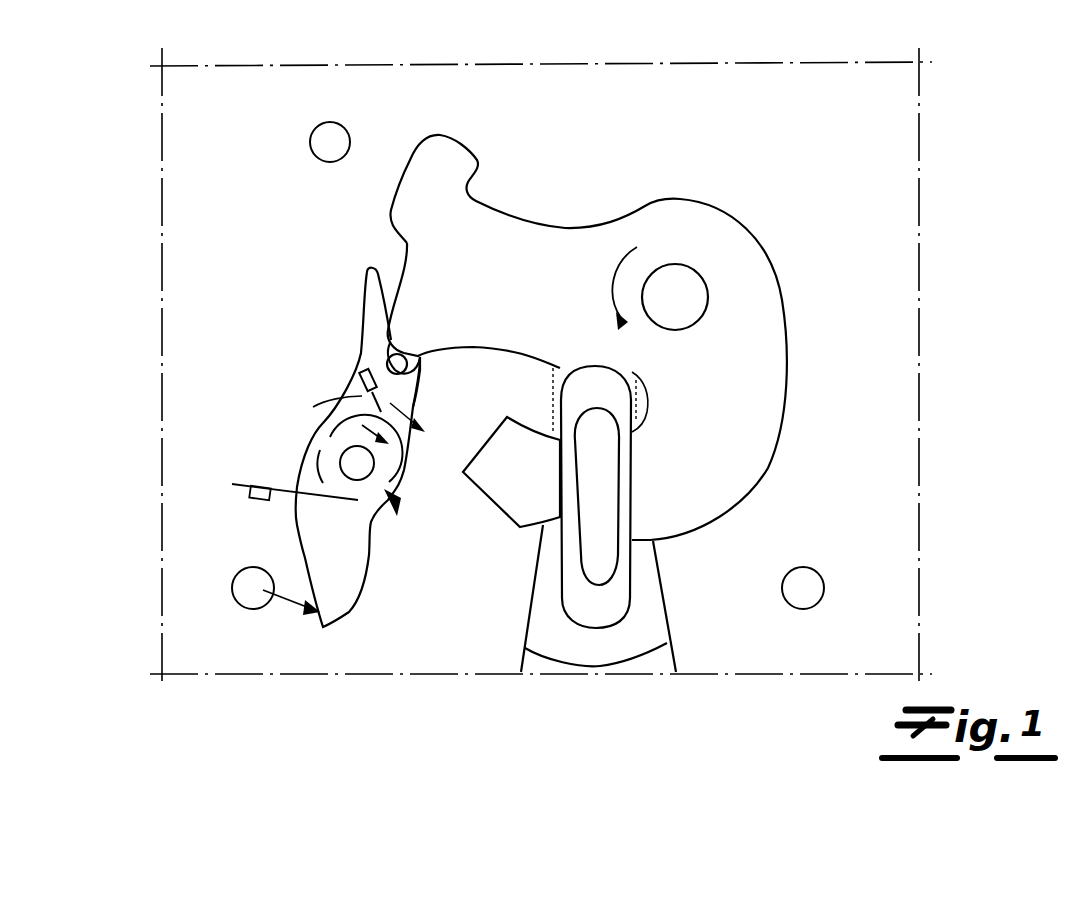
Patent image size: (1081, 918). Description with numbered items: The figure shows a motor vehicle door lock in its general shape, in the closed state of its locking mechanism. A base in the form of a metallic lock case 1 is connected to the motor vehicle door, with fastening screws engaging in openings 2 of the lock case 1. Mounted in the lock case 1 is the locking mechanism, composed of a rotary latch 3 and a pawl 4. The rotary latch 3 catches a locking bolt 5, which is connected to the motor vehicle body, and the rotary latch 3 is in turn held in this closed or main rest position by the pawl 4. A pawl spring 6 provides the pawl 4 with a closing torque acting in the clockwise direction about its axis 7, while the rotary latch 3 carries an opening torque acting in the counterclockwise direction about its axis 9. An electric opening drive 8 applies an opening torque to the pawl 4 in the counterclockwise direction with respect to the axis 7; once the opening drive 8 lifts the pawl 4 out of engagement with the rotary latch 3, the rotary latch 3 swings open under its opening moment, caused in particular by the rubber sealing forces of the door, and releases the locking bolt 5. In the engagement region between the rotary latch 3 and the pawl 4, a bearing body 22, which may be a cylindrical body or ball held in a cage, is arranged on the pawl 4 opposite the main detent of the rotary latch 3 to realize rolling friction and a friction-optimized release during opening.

The lock case 1 is at (812, 148).
The openings 2 is at (330, 128).
The rotary latch 3 is at (779, 334).
The pawl 4 is at (376, 316).
The locking bolt 5 is at (600, 400).
The pawl spring 6 is at (394, 505).
The axis 7 is at (352, 462).
The opening drive 8 is at (290, 600).
The axis 9 is at (686, 291).
The bearing body 22 is at (392, 358).